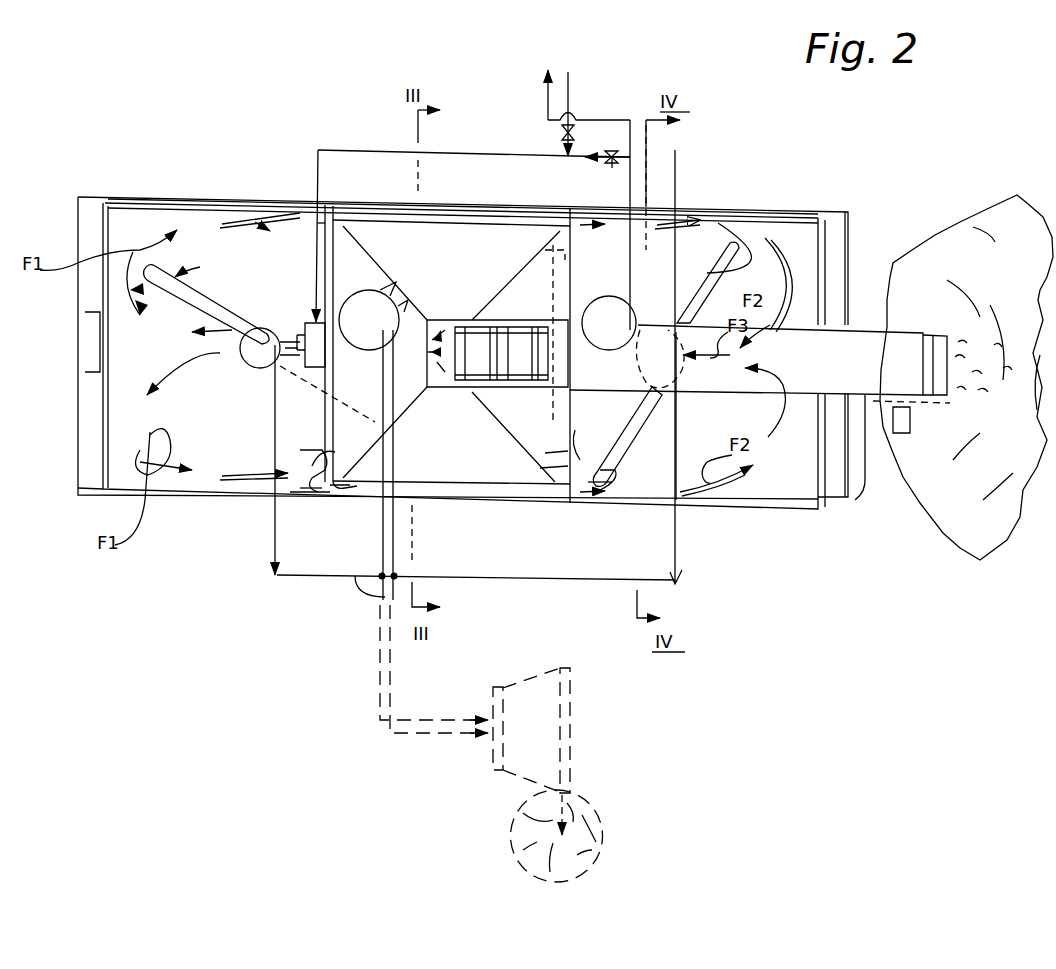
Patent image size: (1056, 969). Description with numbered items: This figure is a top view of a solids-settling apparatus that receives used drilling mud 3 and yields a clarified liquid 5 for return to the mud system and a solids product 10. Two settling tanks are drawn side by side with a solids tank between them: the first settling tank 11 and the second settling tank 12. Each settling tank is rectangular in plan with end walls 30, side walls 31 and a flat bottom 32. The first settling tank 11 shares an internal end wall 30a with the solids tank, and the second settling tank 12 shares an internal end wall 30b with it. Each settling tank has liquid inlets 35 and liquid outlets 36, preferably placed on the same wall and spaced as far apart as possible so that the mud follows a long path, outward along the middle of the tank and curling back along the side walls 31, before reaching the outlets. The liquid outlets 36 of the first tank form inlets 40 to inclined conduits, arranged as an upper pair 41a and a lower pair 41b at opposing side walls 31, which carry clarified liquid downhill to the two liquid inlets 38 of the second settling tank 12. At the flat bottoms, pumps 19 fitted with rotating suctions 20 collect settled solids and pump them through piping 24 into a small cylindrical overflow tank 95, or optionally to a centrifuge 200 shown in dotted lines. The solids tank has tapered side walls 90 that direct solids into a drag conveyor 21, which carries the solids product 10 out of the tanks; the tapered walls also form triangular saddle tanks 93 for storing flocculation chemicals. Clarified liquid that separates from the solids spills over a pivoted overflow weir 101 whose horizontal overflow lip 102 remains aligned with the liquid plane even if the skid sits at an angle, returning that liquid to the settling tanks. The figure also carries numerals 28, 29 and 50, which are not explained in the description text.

The used drilling mud 3 is at (362, 150).
The clarified liquid 5 is at (637, 161).
The solids product 10 is at (1026, 277).
The first settling tank 11 is at (130, 217).
The second settling tank 12 is at (853, 204).
The pumps 19 is at (247, 327).
The rotating suctions 20 is at (207, 300).
The drag conveyor 21 is at (869, 457).
The piping 24 is at (537, 582).
The supply pipe 28 is at (589, 137).
The supply pipe 29 is at (606, 150).
The end walls 30 is at (95, 478).
The internal end wall 30a is at (312, 497).
The internal end wall 30b is at (662, 510).
The side walls 31 is at (190, 497).
The flat bottoms 32 is at (224, 396).
The liquid inlets 35 is at (308, 325).
The liquid outlets 36 is at (640, 320).
The liquid inlets 38 is at (628, 527).
The conduit inlets 40 is at (337, 212).
The upper pair of inclined conduits 41a is at (357, 216).
The lower pair of inclined conduits 41b is at (545, 470).
The central chamber 50 is at (438, 247).
The tapered side walls 90 is at (430, 451).
The saddle tanks 93 is at (466, 253).
The overflow tank 95 is at (348, 308).
The overflow weir 101 is at (567, 413).
The overflow lip 102 is at (570, 488).
The centrifuge 200 is at (572, 728).